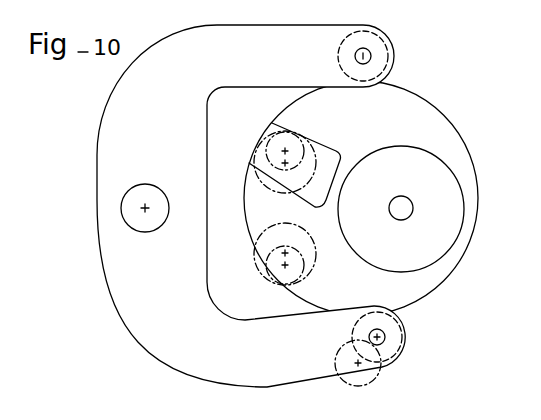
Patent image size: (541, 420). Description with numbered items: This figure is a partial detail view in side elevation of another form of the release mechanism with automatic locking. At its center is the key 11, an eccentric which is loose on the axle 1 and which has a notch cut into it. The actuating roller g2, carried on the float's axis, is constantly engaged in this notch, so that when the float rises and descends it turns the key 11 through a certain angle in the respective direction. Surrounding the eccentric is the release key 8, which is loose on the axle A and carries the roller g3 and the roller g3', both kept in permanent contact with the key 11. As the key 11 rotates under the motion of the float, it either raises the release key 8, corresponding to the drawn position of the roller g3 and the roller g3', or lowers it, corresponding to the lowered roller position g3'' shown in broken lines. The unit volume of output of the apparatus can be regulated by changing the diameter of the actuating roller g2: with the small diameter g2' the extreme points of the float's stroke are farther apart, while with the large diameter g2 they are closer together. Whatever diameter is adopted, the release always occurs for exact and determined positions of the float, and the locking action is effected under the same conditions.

The release key 8 is at (251, 206).
The key 11 is at (437, 113).
The axle 1 is at (403, 209).
The axle A is at (143, 210).
The small diameter of actuating roller g2' is at (260, 197).
The actuating roller g2 is at (265, 208).
The roller g3 is at (391, 56).
The roller g3' is at (407, 338).
The lowered roller position g3'' is at (388, 370).